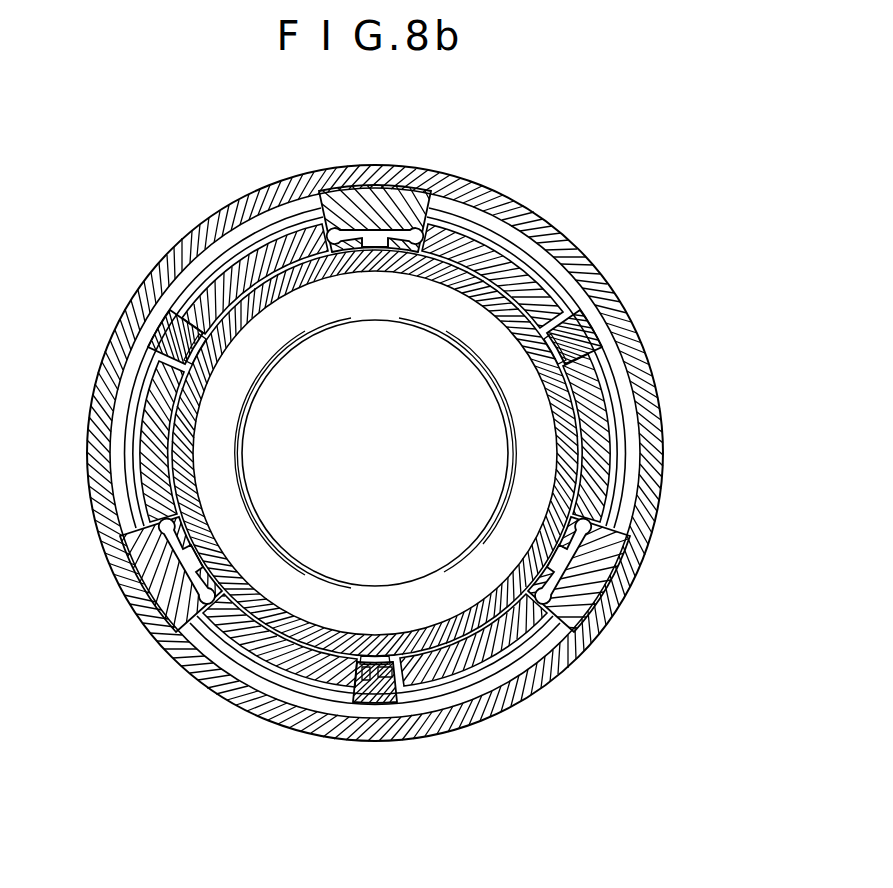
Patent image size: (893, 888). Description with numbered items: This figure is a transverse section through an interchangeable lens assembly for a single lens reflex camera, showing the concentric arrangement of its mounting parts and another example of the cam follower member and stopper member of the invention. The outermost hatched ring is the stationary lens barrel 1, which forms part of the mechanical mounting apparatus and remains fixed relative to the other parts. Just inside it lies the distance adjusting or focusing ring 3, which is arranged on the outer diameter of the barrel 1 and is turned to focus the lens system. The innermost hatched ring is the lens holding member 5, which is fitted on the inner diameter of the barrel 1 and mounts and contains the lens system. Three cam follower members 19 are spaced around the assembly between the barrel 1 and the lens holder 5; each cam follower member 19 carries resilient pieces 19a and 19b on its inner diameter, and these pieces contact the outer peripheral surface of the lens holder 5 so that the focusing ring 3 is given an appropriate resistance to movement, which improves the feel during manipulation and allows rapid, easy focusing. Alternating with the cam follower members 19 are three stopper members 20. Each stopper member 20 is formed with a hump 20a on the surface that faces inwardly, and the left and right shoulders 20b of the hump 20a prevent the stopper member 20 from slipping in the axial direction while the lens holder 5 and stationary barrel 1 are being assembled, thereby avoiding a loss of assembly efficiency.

The lens barrel 1 is at (605, 437).
The focusing ring 3 is at (565, 243).
The lens holding member 5 is at (578, 444).
The cam follower member 19 is at (425, 188).
The resilient piece 19a is at (366, 249).
The resilient piece 19b is at (392, 224).
The stopper member 20 is at (150, 345).
The hump 20a is at (200, 352).
The shoulders 20b is at (364, 668).